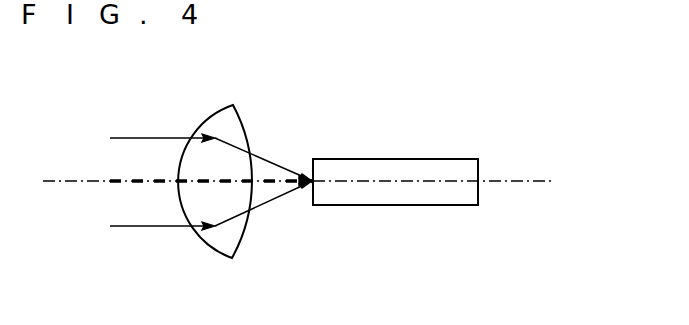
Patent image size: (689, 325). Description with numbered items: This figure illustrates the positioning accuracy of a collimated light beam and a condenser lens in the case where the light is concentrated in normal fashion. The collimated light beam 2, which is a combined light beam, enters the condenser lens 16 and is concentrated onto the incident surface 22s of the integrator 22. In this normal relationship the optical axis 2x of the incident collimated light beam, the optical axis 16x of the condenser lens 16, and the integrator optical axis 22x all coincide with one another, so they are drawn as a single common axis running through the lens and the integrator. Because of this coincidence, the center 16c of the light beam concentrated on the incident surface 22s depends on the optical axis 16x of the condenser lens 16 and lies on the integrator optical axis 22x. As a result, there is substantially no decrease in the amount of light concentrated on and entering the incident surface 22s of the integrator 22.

The collimated light beam 2 is at (146, 137).
The optical axis of the collimated light beam 2x is at (227, 183).
The condenser lens 16 is at (228, 116).
The center of the concentrated light beam 16c is at (313, 186).
The optical axis of the condenser lens 16x is at (67, 184).
The integrator 22 is at (415, 170).
The incident surface of the integrator 22s is at (311, 178).
The integrator optical axis 22x is at (524, 179).